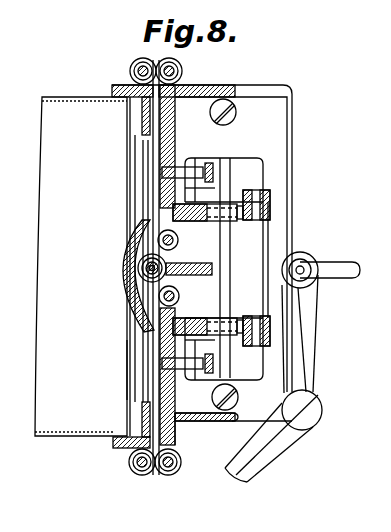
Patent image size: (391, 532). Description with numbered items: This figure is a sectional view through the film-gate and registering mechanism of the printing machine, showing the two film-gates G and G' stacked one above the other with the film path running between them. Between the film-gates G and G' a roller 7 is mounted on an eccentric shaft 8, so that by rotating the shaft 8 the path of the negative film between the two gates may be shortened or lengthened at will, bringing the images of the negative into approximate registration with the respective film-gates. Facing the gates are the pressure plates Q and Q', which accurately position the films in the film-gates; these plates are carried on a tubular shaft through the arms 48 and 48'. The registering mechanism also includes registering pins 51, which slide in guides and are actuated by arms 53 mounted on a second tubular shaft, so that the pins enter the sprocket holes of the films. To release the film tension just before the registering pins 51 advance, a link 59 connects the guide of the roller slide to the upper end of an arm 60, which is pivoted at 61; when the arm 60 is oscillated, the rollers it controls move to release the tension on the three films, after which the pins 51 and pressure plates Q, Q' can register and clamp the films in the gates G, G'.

The pressure plate Q is at (202, 266).
The pressure plate Q' is at (194, 433).
The film-gate G is at (93, 266).
The film-gate G' is at (113, 370).
The roller 7 is at (123, 282).
The eccentric shaft 8 is at (128, 267).
The registering pin 51 is at (172, 213).
The arm 53 is at (272, 198).
The arm 48 is at (215, 253).
The arm 48' is at (217, 361).
The link 59 is at (337, 265).
The arm 60 is at (268, 460).
The pivot 61 is at (308, 418).